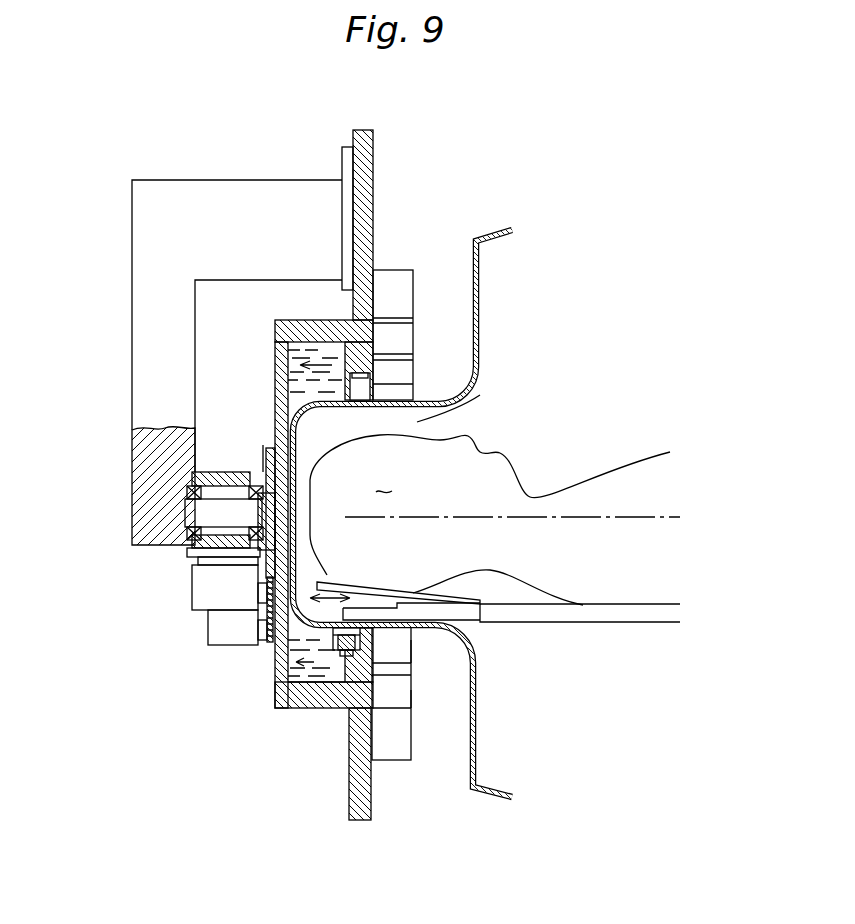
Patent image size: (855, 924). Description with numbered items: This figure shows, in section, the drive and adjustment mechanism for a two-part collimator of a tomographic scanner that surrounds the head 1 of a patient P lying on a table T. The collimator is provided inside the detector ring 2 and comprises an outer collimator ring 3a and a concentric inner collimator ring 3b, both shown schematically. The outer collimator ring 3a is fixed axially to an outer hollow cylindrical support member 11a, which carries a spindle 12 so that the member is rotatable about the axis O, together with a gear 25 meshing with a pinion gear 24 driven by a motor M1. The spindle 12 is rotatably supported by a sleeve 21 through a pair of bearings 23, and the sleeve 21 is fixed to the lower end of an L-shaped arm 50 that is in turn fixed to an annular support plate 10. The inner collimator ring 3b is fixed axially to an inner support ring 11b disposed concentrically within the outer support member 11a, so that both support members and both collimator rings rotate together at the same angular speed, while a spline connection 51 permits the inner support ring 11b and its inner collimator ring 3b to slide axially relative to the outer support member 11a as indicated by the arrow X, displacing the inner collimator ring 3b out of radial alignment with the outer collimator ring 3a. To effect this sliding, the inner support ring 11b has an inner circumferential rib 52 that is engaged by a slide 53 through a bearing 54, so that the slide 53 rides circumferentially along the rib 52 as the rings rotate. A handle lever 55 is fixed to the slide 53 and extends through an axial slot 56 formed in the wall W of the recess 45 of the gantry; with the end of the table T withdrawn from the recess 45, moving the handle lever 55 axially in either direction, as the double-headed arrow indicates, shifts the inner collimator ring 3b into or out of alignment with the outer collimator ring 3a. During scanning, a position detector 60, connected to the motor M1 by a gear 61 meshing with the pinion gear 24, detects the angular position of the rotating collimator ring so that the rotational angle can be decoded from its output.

The head 1 is at (384, 478).
The detector ring 2 is at (425, 252).
The outer collimator ring 3a is at (424, 703).
The inner collimator ring 3b is at (425, 655).
The annular support plate 10 is at (362, 152).
The outer hollow cylindrical support member 11a is at (305, 706).
The inner support ring 11b is at (347, 752).
The spindle 12 is at (230, 510).
The sleeve 21 is at (216, 472).
The bearings 23 is at (190, 549).
The pinion gear 24 is at (237, 612).
The gear 25 is at (270, 465).
The recess 45 is at (437, 418).
The L-shaped arm 50 is at (140, 246).
The spline connection 51 is at (278, 683).
The inner circumferential rib 52 is at (350, 390).
The slide 53 is at (290, 636).
The bearing 54 is at (344, 655).
The handle lever 55 is at (447, 622).
The axial slot 56 is at (266, 640).
The position detector 60 is at (267, 620).
The gear 61 is at (305, 625).
The motor M1 is at (203, 595).
The arrow X is at (305, 355).
The wall W is at (315, 409).
The patient P is at (615, 470).
The axis O is at (620, 517).
The table T is at (637, 620).